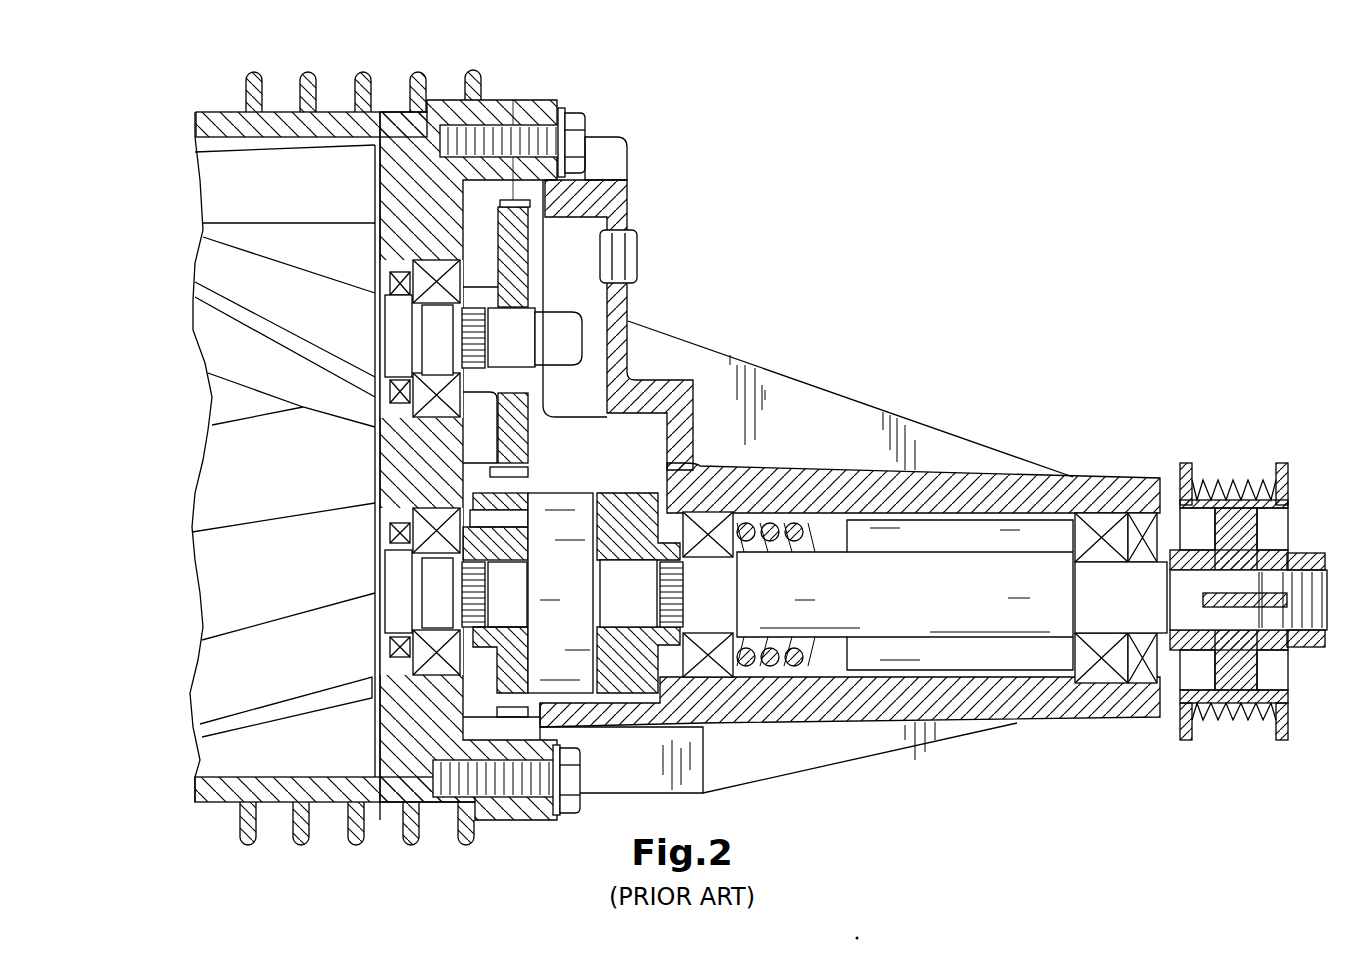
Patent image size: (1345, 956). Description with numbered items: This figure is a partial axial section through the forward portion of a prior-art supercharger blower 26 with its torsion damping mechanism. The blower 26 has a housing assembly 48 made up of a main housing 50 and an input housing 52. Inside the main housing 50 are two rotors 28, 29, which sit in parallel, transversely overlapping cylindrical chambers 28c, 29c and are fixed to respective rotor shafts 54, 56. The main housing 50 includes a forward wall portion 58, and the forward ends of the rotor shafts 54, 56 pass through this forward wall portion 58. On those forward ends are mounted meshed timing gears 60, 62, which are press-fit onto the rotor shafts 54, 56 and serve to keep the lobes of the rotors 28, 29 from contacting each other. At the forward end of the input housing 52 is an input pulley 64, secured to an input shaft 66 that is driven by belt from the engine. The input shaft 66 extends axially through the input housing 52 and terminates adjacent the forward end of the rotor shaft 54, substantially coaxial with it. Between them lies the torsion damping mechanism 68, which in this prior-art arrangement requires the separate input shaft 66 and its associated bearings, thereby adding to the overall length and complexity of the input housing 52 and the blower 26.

The blower 26 is at (816, 374).
The rotor 28 is at (197, 737).
The cylindrical chamber 28c is at (302, 767).
The rotor 29 is at (230, 170).
The cylindrical chamber 29c is at (340, 153).
The housing assembly 48 is at (510, 92).
The main housing 50 is at (330, 157).
The input housing 52 is at (980, 470).
The rotor shaft 54 is at (440, 590).
The rotor shaft 56 is at (583, 336).
The forward wall portion 58 is at (403, 467).
The timing gear 60 is at (530, 695).
The timing gear 62 is at (513, 284).
The input pulley 64 is at (1180, 476).
The input shaft 66 is at (874, 608).
The torsion damping mechanism 68 is at (575, 480).